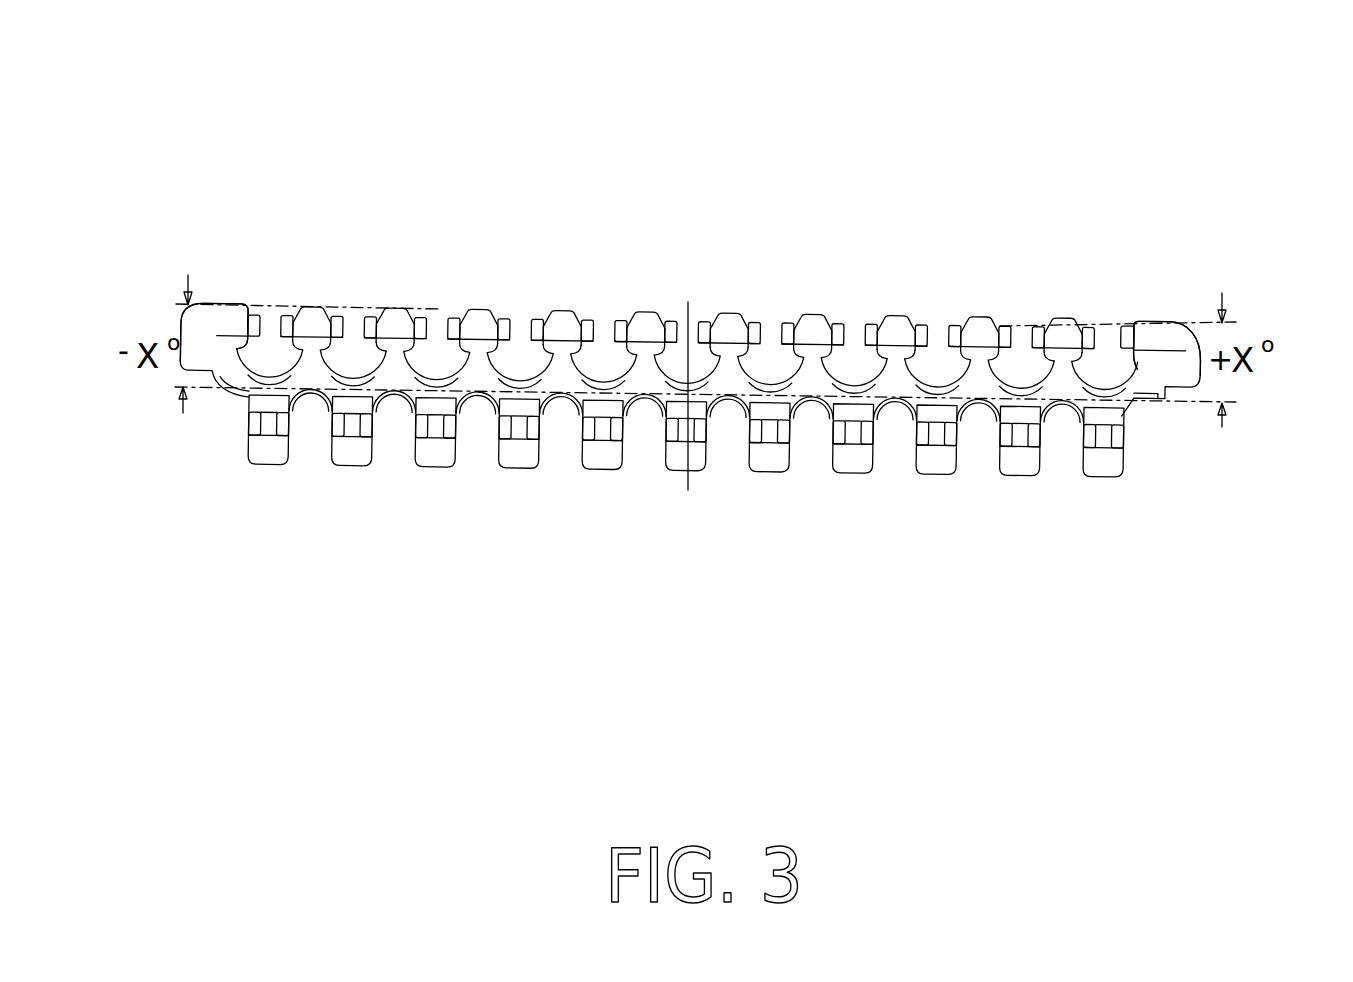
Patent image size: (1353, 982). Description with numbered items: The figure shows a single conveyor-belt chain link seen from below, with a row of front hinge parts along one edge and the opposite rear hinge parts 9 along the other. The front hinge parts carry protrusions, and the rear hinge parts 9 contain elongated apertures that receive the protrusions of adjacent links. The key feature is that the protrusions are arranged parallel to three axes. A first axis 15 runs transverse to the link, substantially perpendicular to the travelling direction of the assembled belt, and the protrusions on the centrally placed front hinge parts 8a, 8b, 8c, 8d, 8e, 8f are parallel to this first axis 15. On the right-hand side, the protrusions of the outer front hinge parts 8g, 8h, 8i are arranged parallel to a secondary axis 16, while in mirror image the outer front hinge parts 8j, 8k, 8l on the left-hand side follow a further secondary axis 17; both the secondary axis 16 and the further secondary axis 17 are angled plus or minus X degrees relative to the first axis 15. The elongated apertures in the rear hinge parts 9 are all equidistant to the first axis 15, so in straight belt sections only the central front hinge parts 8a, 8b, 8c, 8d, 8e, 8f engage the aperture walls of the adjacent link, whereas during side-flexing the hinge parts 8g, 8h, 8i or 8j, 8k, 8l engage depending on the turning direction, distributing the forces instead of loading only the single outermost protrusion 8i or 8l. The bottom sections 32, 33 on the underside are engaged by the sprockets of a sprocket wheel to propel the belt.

The front hinge part 8a is at (478, 298).
The front hinge part 8b is at (563, 298).
The front hinge part 8c is at (643, 300).
The front hinge part 8d is at (727, 300).
The front hinge part 8e is at (813, 303).
The front hinge part 8f is at (895, 310).
The outer front hinge part 8g is at (987, 294).
The outer front hinge part 8h is at (1058, 288).
The outer front hinge part 8i is at (1150, 293).
The outer front hinge part 8j is at (395, 298).
The outer front hinge part 8k is at (309, 294).
The outer front hinge part 8l is at (231, 316).
The rear hinge part 9 is at (771, 492).
The first axis 15 is at (1183, 405).
The secondary axis 16 is at (1196, 314).
The further secondary axis 17 is at (197, 307).
The bottom section 32 is at (1075, 408).
The bottom section 33 is at (1099, 373).